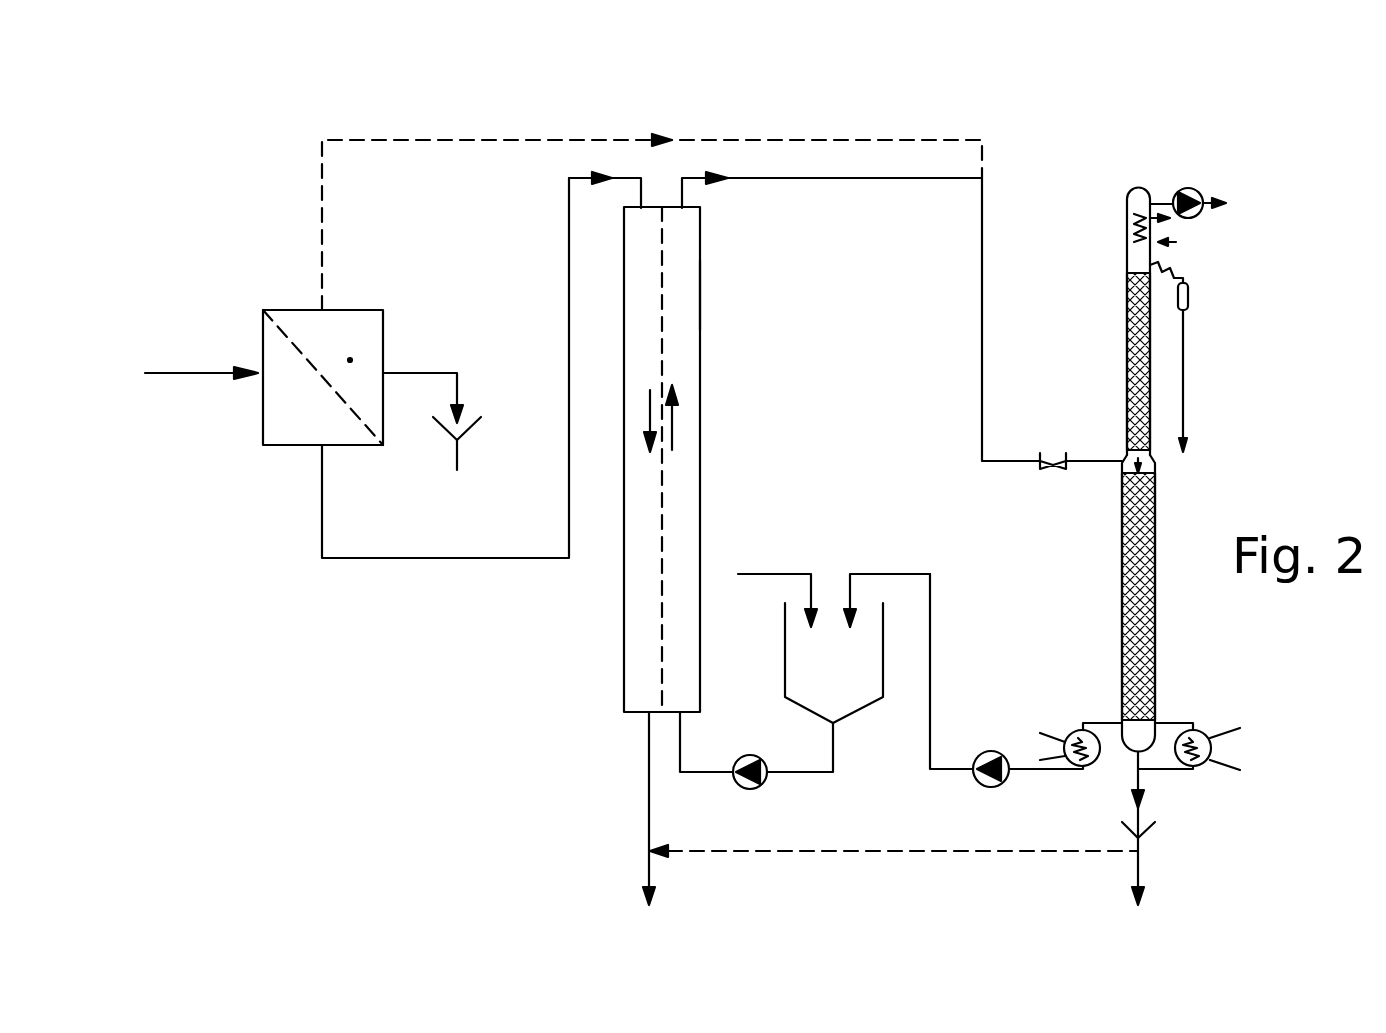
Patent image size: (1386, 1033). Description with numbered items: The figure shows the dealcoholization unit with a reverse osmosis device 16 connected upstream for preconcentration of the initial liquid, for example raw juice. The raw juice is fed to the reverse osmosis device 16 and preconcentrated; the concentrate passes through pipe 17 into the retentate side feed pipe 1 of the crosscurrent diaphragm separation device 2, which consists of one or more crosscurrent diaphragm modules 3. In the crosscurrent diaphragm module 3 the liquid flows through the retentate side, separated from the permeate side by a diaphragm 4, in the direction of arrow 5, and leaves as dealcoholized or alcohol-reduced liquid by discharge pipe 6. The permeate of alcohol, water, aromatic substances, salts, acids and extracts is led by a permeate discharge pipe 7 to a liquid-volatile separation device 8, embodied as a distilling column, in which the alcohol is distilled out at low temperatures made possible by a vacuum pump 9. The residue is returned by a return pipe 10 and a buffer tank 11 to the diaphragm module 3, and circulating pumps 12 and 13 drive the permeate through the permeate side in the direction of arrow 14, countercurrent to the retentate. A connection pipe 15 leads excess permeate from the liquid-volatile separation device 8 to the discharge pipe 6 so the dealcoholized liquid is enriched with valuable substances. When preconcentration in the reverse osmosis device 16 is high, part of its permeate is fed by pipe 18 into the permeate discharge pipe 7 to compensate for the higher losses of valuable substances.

The feed pipe 1 is at (581, 178).
The crosscurrent diaphragm separation device 2 is at (714, 258).
The crosscurrent diaphragm module 3 is at (686, 290).
The diaphragm 4 is at (663, 322).
The arrow 5 is at (650, 405).
The discharge pipe 6 is at (648, 800).
The permeate discharge pipe 7 is at (778, 178).
The liquid-volatile separation device 8 is at (1150, 380).
The vacuum pump 9 is at (1188, 188).
The return pipe 10 is at (683, 748).
The buffer tank 11 is at (810, 655).
The circulating pump 12 is at (986, 790).
The circulating pump 13 is at (745, 790).
The arrow 14 is at (672, 428).
The connection pipe 15 is at (898, 852).
The reverse osmosis device 16 is at (277, 352).
The pipe 17 is at (322, 512).
The pipe 18 is at (893, 140).